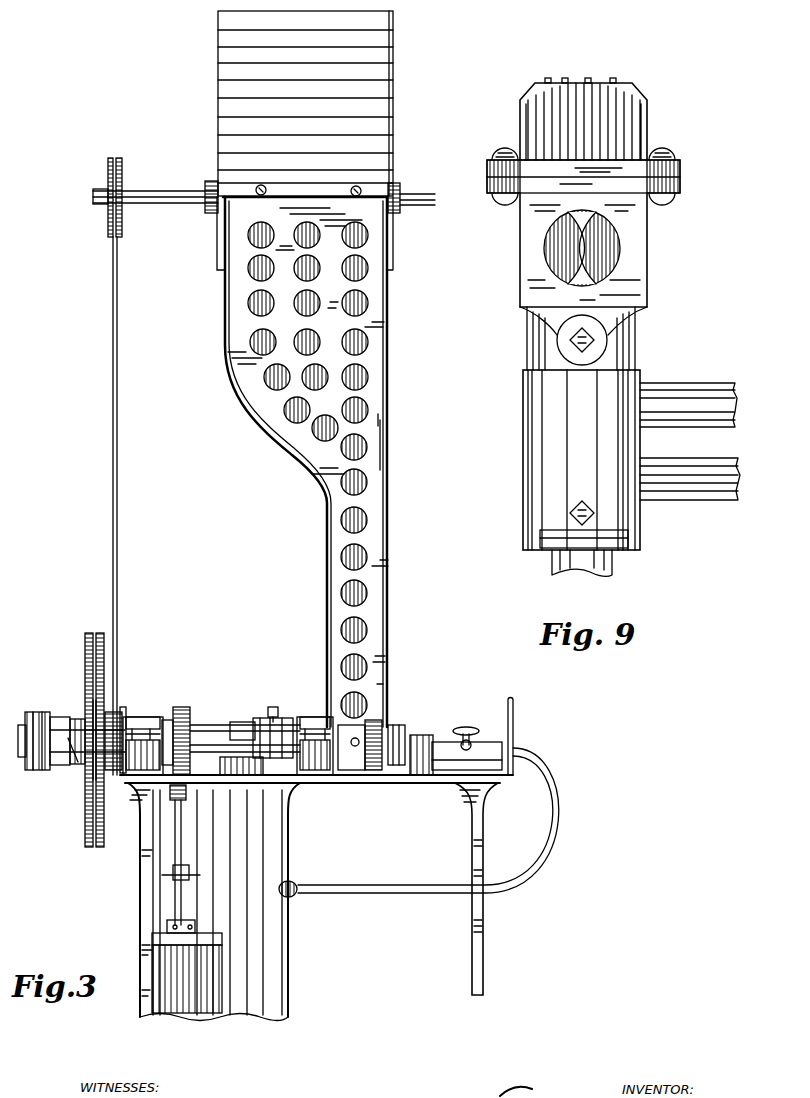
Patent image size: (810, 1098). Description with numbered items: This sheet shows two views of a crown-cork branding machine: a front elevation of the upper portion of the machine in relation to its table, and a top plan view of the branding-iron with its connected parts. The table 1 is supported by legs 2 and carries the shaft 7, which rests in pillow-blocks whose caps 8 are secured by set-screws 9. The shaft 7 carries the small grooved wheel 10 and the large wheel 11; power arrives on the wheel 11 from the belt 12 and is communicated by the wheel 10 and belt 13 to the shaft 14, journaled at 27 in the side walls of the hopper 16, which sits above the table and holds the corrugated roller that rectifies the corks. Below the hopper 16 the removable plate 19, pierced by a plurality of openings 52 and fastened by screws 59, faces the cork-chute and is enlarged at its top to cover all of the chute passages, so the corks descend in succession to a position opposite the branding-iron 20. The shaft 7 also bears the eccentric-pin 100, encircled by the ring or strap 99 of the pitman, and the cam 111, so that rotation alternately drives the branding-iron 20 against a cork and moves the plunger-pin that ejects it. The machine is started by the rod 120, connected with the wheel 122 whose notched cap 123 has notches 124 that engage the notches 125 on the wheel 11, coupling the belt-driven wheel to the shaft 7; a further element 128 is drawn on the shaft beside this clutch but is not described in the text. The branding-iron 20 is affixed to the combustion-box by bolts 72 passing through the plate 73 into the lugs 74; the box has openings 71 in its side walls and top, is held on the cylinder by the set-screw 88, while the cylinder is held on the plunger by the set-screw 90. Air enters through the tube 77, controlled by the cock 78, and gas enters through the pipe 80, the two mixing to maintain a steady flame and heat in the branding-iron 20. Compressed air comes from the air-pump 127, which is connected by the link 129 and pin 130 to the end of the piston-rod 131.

In FIG. 3, the table 1 is at (318, 784).
In FIG. 3, the legs 2 is at (138, 1010).
In FIG. 3, the shaft 7 is at (208, 728).
In FIG. 3, the caps 8 is at (140, 718).
In FIG. 3, the set-screws 9 is at (228, 719).
In FIG. 3, the small grooved wheel 10 is at (125, 707).
In FIG. 3, the large wheel 11 is at (84, 638).
In FIG. 3, the belt 12 is at (94, 848).
In FIG. 3, the belt 13 is at (118, 384).
In FIG. 3, the shaft 14 is at (92, 196).
In FIG. 3, the hopper 16 is at (305, 103).
In FIG. 3, the removable plate 19 is at (384, 380).
In FIG. 9, the branding-iron 20 is at (620, 112).
In FIG. 3, the journals 27 is at (208, 187).
In FIG. 3, the openings 52 is at (276, 338).
In FIG. 3, the screws 59 is at (266, 186).
In FIG. 9, the openings 71 is at (583, 250).
In FIG. 9, the bolts 72 is at (500, 150).
In FIG. 9, the plate 73 is at (487, 170).
In FIG. 9, the lugs 74 is at (494, 200).
In FIG. 3, the tube 77 is at (404, 887).
In FIG. 9, the tube 77 is at (740, 488).
In FIG. 3, the cock 78 is at (466, 725).
In FIG. 9, the pipe 80 is at (718, 403).
In FIG. 9, the set-screw 88 is at (600, 340).
In FIG. 9, the set-screw 90 is at (598, 515).
In FIG. 3, the ring or strap 99 is at (390, 785).
In FIG. 3, the eccentric-pin 100 is at (425, 735).
In FIG. 3, the cam 111 is at (242, 724).
In FIG. 3, the rod 120 is at (503, 770).
In FIG. 3, the wheel 122 is at (28, 716).
In FIG. 3, the cap 123 is at (60, 716).
In FIG. 3, the notches 124 is at (62, 768).
In FIG. 3, the notches 125 is at (72, 770).
In FIG. 3, the air-pump 127 is at (152, 952).
In FIG. 3, the gear 128 is at (184, 708).
In FIG. 3, the link 129 is at (187, 836).
In FIG. 3, the pin 130 is at (192, 876).
In FIG. 3, the piston-rod 131 is at (168, 903).